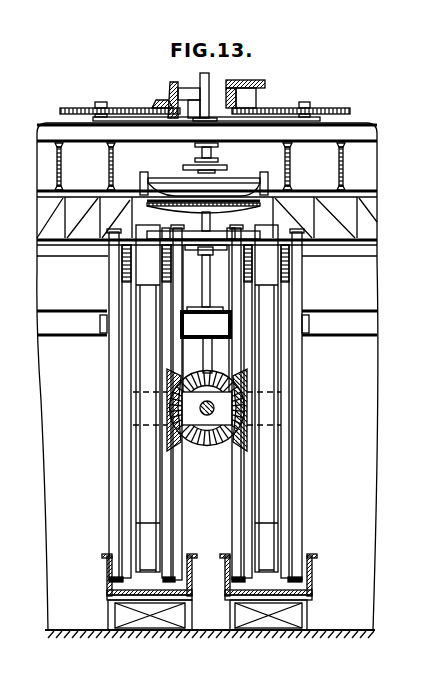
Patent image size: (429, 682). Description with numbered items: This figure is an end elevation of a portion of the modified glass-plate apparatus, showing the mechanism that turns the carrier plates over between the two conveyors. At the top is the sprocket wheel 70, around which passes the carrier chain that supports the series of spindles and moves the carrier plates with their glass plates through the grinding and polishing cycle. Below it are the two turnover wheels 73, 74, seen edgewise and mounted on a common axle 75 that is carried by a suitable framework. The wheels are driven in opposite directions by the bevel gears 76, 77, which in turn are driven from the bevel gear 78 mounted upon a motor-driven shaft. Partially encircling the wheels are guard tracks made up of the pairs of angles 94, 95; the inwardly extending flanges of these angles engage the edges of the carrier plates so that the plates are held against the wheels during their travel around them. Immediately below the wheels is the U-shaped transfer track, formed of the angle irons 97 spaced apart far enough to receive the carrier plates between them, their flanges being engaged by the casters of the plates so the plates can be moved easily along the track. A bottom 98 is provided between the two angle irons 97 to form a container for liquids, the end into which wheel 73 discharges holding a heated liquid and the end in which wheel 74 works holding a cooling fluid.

The sprocket wheel 70 is at (268, 194).
The turnover wheel 73 is at (268, 497).
The turnover wheel 74 is at (141, 479).
The axle 75 is at (206, 416).
The bevel gear 76 is at (246, 382).
The bevel gear 77 is at (167, 382).
The bevel gear 78 is at (215, 446).
The angles of guard track 94 is at (184, 528).
The angles of guard track 95 is at (111, 521).
The angle irons of transfer track 97 is at (110, 587).
The bottom 98 is at (153, 597).